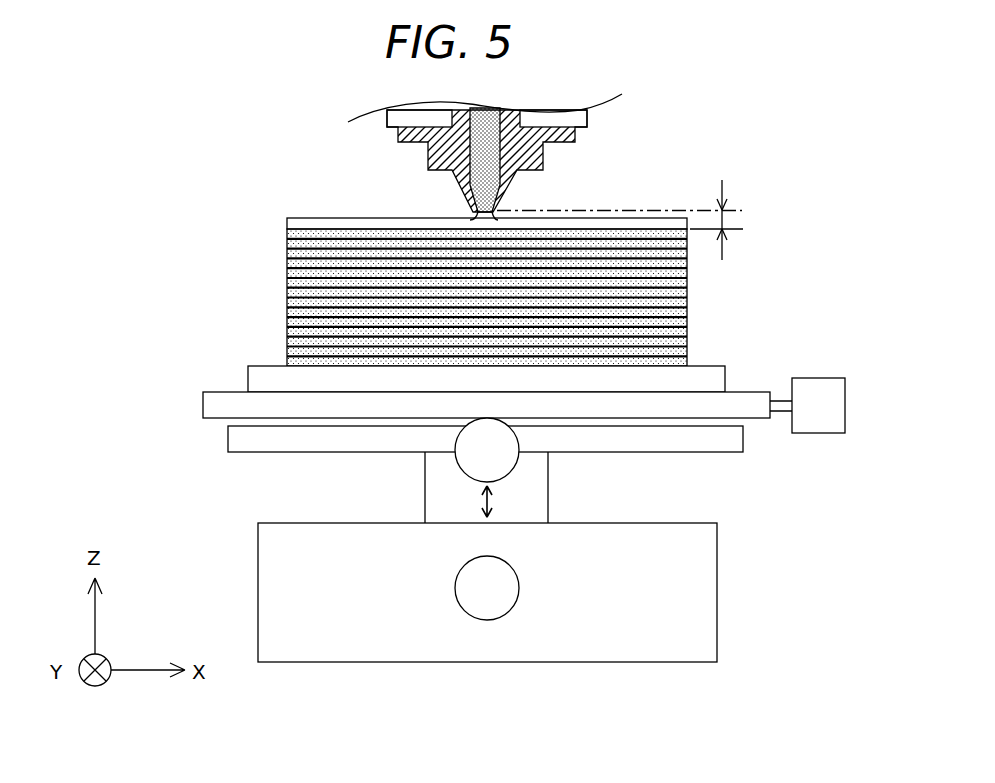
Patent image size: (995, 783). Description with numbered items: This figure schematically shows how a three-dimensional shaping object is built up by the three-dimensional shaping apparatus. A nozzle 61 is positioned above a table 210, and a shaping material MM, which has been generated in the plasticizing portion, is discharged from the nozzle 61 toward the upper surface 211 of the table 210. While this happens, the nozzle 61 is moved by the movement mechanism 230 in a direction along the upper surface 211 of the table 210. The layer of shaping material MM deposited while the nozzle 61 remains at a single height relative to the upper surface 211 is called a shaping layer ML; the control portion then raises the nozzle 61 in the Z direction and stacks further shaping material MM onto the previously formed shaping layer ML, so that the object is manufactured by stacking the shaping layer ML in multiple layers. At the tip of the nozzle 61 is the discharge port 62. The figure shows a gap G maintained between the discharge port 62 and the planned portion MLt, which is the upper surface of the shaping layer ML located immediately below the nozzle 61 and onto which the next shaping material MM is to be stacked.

The nozzle 61 is at (407, 162).
The discharge port 62 is at (473, 212).
The table 210 is at (706, 380).
The upper surface 211 is at (693, 364).
The movement mechanism 230 is at (762, 512).
The shaping material MM is at (490, 147).
The shaping layer ML is at (285, 290).
The planned portion MLt is at (618, 230).
The gap G is at (717, 220).